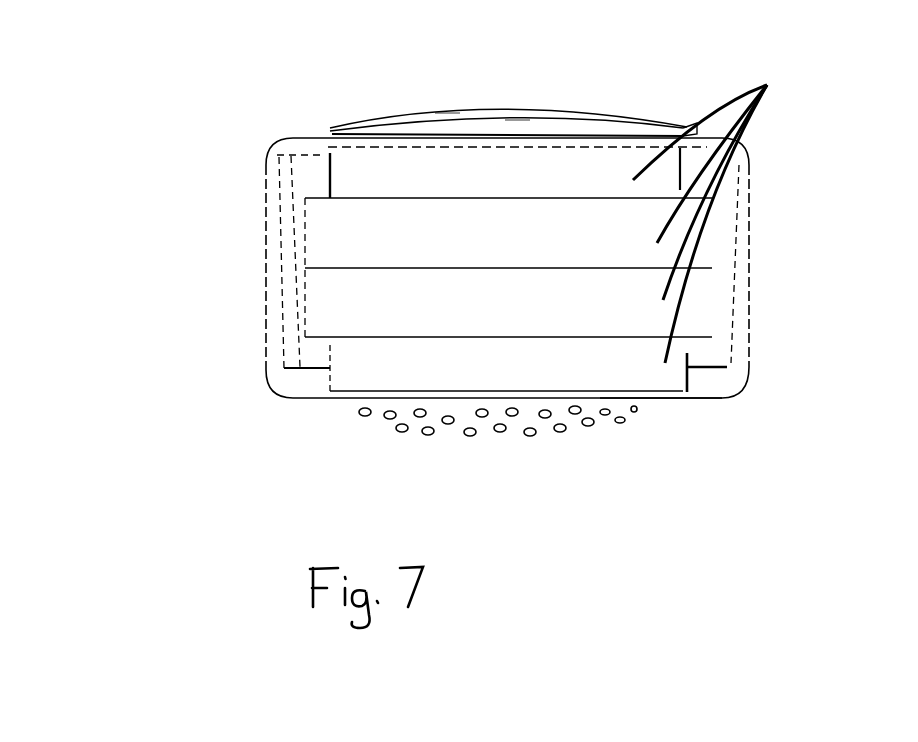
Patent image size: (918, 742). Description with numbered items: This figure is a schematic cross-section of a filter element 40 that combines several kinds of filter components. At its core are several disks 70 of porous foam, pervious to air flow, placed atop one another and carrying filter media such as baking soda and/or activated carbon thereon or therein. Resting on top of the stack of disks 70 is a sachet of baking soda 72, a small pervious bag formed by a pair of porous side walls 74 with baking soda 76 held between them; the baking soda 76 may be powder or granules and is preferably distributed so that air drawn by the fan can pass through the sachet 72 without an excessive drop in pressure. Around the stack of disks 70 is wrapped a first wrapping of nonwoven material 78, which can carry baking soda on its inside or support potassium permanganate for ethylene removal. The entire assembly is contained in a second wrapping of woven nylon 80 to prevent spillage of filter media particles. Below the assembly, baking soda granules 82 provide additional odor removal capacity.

The filter element 40 is at (373, 102).
The disks 70 is at (734, 210).
The sachet of baking soda 72 is at (587, 107).
The porous side walls 74 is at (453, 132).
The baking soda 76 is at (517, 123).
The nonwoven material 78 is at (278, 228).
The woven nylon 80 is at (660, 400).
The baking soda granules 82 is at (393, 422).